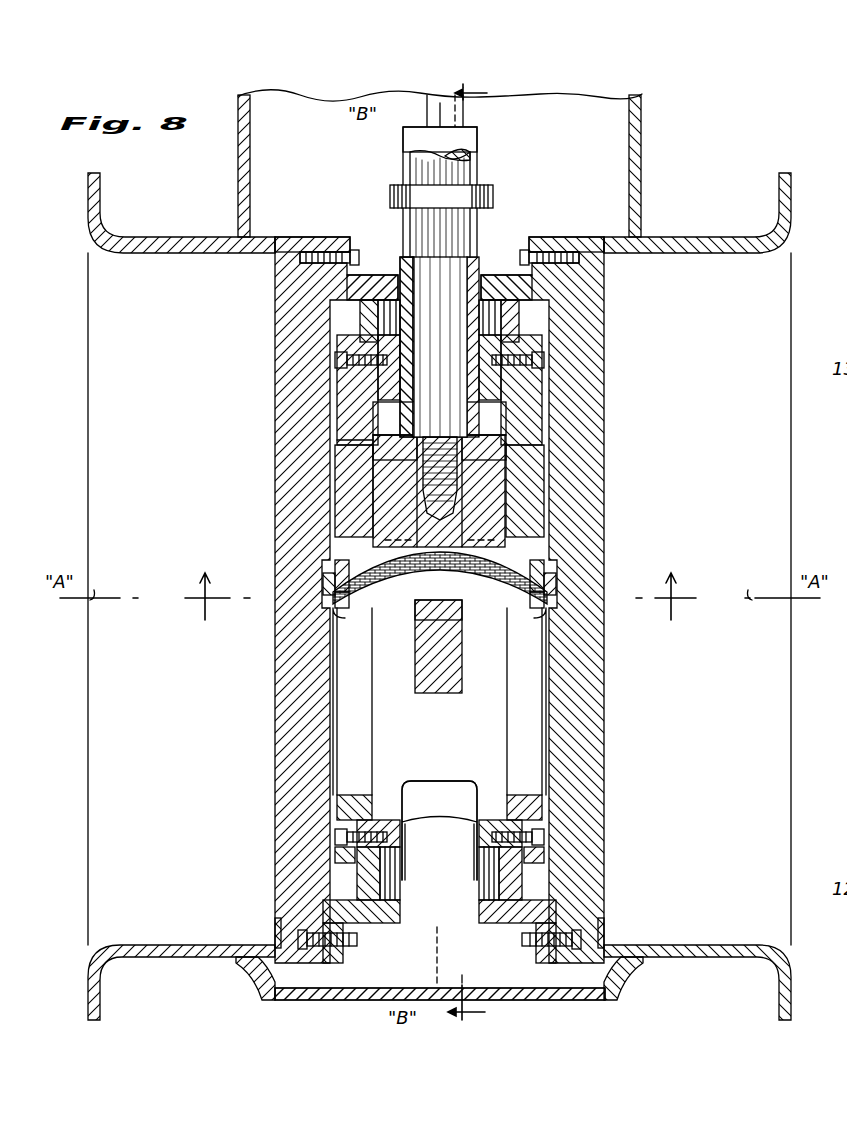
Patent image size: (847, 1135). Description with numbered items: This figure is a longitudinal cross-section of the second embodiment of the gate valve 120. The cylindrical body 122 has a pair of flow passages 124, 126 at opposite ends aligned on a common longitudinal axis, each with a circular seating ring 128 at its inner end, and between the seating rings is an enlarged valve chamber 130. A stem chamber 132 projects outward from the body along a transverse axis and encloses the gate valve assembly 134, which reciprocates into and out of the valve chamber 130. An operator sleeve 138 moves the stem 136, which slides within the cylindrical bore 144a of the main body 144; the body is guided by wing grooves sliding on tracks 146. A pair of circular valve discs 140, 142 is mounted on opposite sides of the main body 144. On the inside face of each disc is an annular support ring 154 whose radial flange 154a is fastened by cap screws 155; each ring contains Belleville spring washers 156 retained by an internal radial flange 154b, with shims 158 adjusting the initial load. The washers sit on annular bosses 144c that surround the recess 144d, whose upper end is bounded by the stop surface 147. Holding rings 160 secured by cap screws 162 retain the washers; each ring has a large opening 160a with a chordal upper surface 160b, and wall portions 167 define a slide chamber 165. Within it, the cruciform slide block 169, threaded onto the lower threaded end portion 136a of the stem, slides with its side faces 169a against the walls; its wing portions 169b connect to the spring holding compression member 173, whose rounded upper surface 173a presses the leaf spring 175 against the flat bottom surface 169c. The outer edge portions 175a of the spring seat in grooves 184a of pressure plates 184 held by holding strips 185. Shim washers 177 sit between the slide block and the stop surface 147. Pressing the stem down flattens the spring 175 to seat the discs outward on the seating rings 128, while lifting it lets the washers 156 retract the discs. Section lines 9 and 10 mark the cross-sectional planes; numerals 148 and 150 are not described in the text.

The section line 9 is at (434, 602).
The section line 10 is at (486, 556).
The valve 120 is at (439, 213).
The cylindrical body 122 is at (598, 998).
The flow passage 124 is at (96, 944).
The flow passage 126 is at (770, 944).
The seating ring 128 is at (295, 238).
The valve chamber 130 is at (330, 996).
The stem chamber 132 is at (640, 116).
The gate valve assembly 134 is at (558, 175).
The stem 136 is at (462, 268).
The lower threaded end portion 136a is at (462, 480).
The operator sleeve 138 is at (392, 196).
The valve disc 140 is at (265, 706).
The valve disc 142 is at (616, 739).
The main body 144 is at (392, 272).
The cylindrical bore 144a is at (385, 350).
The annular boss 144c is at (495, 350).
The recess 144d is at (482, 810).
The track 146 is at (455, 125).
The stop surface 147 is at (505, 417).
The curved flange portion 148 is at (258, 975).
The liner strip 150 is at (276, 926).
The support ring 154 is at (395, 912).
The radial flange 154a is at (340, 963).
The internal radial flange 154b is at (483, 876).
The cap screw 155 is at (330, 250).
The Belleville spring washer 156 is at (380, 870).
The shim 158 is at (337, 296).
The holding ring 160 is at (342, 850).
The large opening 160a is at (350, 803).
The chordal upper surface 160b is at (355, 528).
The cap screw 162 is at (345, 358).
The slide chamber 165 is at (375, 417).
The wall portion 167 is at (360, 480).
The slide block 169 is at (395, 500).
The side face 169a is at (380, 448).
The wing portion 169b is at (385, 540).
The flat bottom surface 169c is at (495, 540).
The spring holding compression member 173 is at (444, 702).
The rounded upper surface 173a is at (470, 605).
The leaf spring 175 is at (405, 600).
The outer edge portion 175a is at (340, 594).
The shim washer 177 is at (372, 440).
The pressure plate 184 is at (340, 600).
The groove 184a is at (330, 600).
The holding strip 185 is at (335, 630).